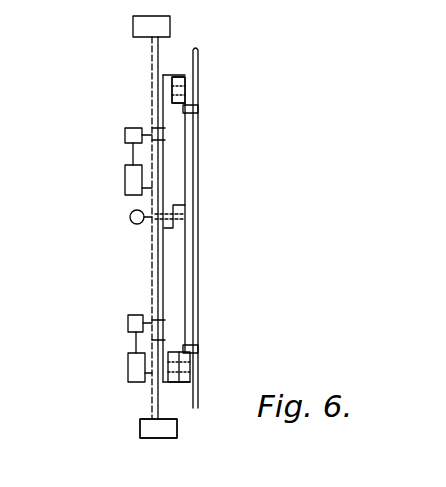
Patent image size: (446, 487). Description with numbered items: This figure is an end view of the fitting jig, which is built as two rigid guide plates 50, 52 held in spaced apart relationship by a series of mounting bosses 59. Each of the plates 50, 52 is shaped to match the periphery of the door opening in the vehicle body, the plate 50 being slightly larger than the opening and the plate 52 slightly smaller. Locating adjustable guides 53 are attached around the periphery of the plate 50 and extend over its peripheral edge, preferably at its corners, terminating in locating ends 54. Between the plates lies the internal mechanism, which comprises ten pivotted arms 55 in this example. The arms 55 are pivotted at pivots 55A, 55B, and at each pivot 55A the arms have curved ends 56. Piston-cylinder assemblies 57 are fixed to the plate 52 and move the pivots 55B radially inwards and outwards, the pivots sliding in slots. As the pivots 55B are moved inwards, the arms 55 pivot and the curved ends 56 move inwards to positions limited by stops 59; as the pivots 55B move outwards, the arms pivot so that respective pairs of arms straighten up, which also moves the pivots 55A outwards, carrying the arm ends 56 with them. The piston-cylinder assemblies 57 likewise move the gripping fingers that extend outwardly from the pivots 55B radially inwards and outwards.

The guide plate 50 is at (152, 255).
The guide plate 52 is at (199, 172).
The locating adjustable guide 53 is at (133, 24).
The locating end 54 is at (140, 430).
The pivotted arm 55 is at (165, 124).
The pivot 55A is at (172, 90).
The pivot 55B is at (187, 212).
The curved end 56 is at (168, 70).
The piston-cylinder assembly 57 is at (125, 178).
The mounting boss 59 is at (198, 109).